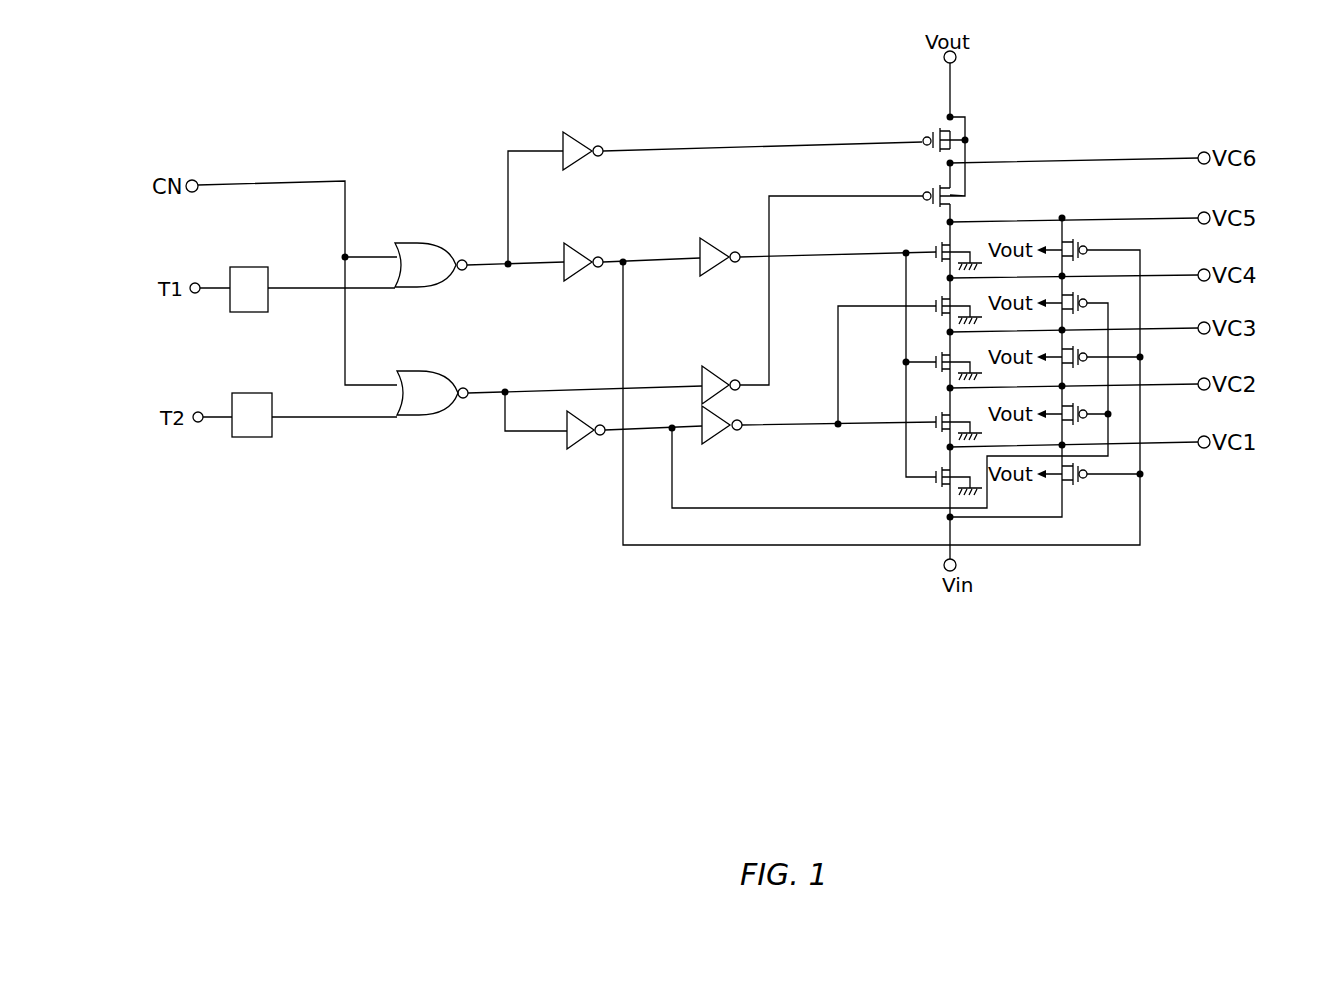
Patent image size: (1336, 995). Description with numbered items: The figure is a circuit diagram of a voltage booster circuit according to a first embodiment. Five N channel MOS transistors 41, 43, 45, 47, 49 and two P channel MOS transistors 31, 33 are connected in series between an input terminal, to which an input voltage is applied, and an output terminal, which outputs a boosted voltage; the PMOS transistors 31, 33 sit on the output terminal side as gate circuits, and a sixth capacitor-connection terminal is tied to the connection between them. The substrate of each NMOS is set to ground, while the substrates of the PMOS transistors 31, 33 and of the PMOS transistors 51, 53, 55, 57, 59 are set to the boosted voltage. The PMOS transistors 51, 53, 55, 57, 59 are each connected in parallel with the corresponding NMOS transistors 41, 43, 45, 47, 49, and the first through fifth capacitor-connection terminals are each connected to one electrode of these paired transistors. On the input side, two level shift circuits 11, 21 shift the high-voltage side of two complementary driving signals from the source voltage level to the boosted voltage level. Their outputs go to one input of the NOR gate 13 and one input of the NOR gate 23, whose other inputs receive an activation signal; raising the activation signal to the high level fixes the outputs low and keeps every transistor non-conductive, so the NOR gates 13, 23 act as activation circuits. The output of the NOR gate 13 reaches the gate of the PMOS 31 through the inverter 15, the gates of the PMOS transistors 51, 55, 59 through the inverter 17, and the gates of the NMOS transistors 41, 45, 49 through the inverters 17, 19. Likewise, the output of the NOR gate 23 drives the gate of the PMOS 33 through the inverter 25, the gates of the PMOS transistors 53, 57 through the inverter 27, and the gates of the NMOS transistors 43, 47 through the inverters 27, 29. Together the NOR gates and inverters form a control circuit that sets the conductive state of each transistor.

The level shift circuit 11 is at (253, 278).
The level shift circuit 21 is at (255, 405).
The NOR gate 13 is at (432, 257).
The NOR gate 23 is at (432, 387).
The inverter 15 is at (578, 145).
The inverter 17 is at (580, 257).
The inverter 19 is at (712, 253).
The inverter 25 is at (714, 376).
The inverter 27 is at (578, 440).
The inverter 29 is at (712, 440).
The P channel MOS transistor 31 is at (942, 120).
The P channel MOS transistor 33 is at (942, 183).
The N channel MOS transistor 41 is at (942, 243).
The N channel MOS transistor 43 is at (937, 296).
The N channel MOS transistor 45 is at (937, 351).
The N channel MOS transistor 47 is at (937, 410).
The N channel MOS transistor 49 is at (937, 466).
The P channel MOS transistor 51 is at (1075, 234).
The P channel MOS transistor 53 is at (1075, 288).
The P channel MOS transistor 55 is at (1075, 342).
The P channel MOS transistor 57 is at (1075, 400).
The P channel MOS transistor 59 is at (1080, 486).